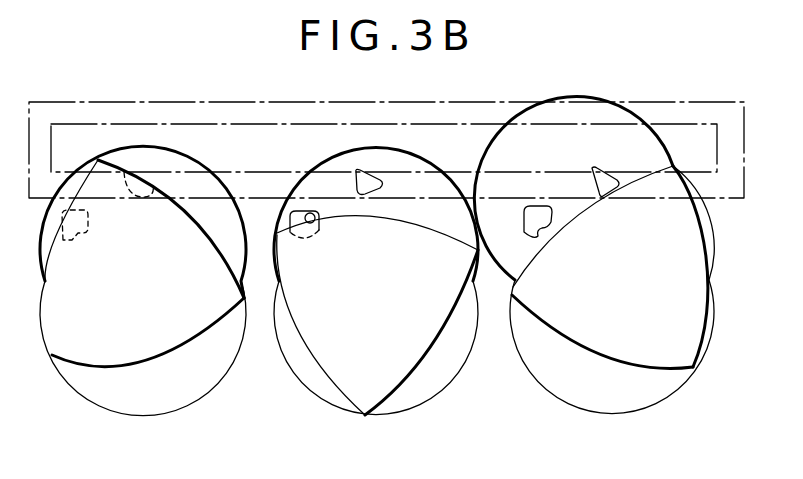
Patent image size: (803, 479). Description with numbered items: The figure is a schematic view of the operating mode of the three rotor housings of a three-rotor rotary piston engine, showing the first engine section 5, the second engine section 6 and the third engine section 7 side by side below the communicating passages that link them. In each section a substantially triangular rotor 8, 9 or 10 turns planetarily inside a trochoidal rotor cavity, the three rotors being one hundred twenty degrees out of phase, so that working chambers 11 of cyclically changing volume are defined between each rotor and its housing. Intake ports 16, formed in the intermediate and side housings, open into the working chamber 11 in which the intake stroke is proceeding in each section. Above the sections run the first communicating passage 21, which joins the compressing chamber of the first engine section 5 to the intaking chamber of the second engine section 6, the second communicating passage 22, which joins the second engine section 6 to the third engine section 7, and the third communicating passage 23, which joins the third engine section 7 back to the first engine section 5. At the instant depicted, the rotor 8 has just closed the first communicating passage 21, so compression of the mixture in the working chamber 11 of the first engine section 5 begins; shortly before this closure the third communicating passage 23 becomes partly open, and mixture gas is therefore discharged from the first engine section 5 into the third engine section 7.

The first engine section 5 is at (186, 413).
The second engine section 6 is at (437, 404).
The third engine section 7 is at (580, 417).
The rotor 8 is at (142, 357).
The rotor 9 is at (320, 370).
The rotor 10 is at (607, 358).
The working chamber 11 is at (182, 163).
The intake port 16 is at (78, 230).
The first communicating passage 21 is at (267, 172).
The second communicating passage 22 is at (523, 172).
The third communicating passage 23 is at (610, 102).